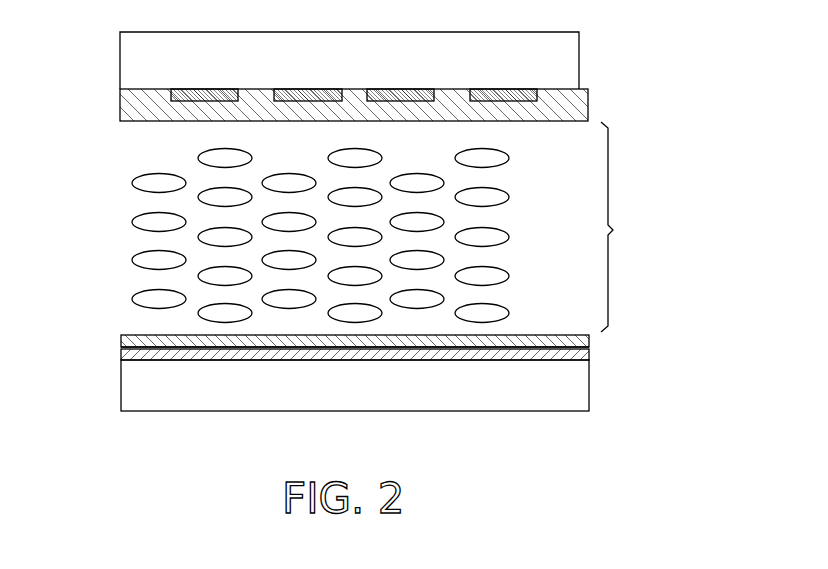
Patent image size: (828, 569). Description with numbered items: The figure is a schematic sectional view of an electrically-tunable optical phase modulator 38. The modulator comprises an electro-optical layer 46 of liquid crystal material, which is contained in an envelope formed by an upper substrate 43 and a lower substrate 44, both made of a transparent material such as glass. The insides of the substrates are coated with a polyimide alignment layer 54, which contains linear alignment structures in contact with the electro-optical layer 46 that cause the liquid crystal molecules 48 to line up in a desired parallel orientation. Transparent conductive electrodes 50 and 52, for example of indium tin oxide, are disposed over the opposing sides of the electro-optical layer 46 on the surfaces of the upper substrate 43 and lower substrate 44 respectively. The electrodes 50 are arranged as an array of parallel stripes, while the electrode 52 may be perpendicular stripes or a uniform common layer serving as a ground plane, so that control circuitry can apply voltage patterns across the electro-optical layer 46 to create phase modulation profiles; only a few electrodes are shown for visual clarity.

The optical phase modulator 38 is at (654, 85).
The upper substrate 43 is at (573, 50).
The lower substrate 44 is at (580, 394).
The electro-optical layer 46 is at (628, 227).
The liquid crystal molecules 48 is at (500, 229).
The electrodes 50 is at (191, 92).
The electrodes 52 is at (124, 351).
The polyimide alignment layer 54 is at (126, 112).